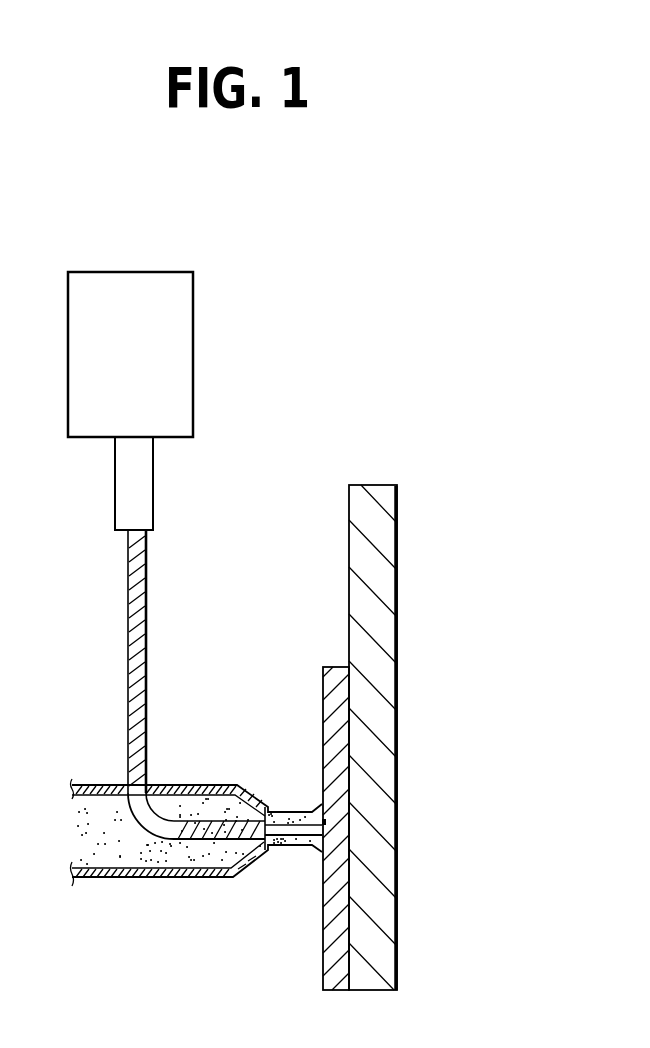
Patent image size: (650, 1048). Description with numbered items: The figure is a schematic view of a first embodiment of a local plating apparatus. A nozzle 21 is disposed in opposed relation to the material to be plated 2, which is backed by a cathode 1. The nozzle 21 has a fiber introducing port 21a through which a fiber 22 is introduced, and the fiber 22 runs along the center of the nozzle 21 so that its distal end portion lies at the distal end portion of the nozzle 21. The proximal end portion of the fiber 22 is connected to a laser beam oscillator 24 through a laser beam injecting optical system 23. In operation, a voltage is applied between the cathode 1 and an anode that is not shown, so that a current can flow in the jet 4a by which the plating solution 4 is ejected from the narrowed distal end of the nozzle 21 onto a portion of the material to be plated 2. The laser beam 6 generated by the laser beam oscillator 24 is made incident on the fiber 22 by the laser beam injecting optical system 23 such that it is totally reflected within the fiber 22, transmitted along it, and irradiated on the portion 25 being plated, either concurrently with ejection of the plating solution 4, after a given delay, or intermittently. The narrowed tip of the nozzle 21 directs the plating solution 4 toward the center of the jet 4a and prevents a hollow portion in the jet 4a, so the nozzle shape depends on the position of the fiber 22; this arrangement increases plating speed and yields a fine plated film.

The cathode 1 is at (397, 499).
The material to be plated 2 is at (322, 680).
The plating solution 4 is at (134, 850).
The jet 4a is at (293, 853).
The laser beam 6 is at (289, 812).
The nozzle 21 is at (212, 785).
The fiber introducing port 21a is at (147, 793).
The fiber 22 is at (130, 612).
The laser beam injecting optical system 23 is at (144, 472).
The laser beam oscillator 24 is at (192, 348).
The portion being plated 25 is at (323, 829).